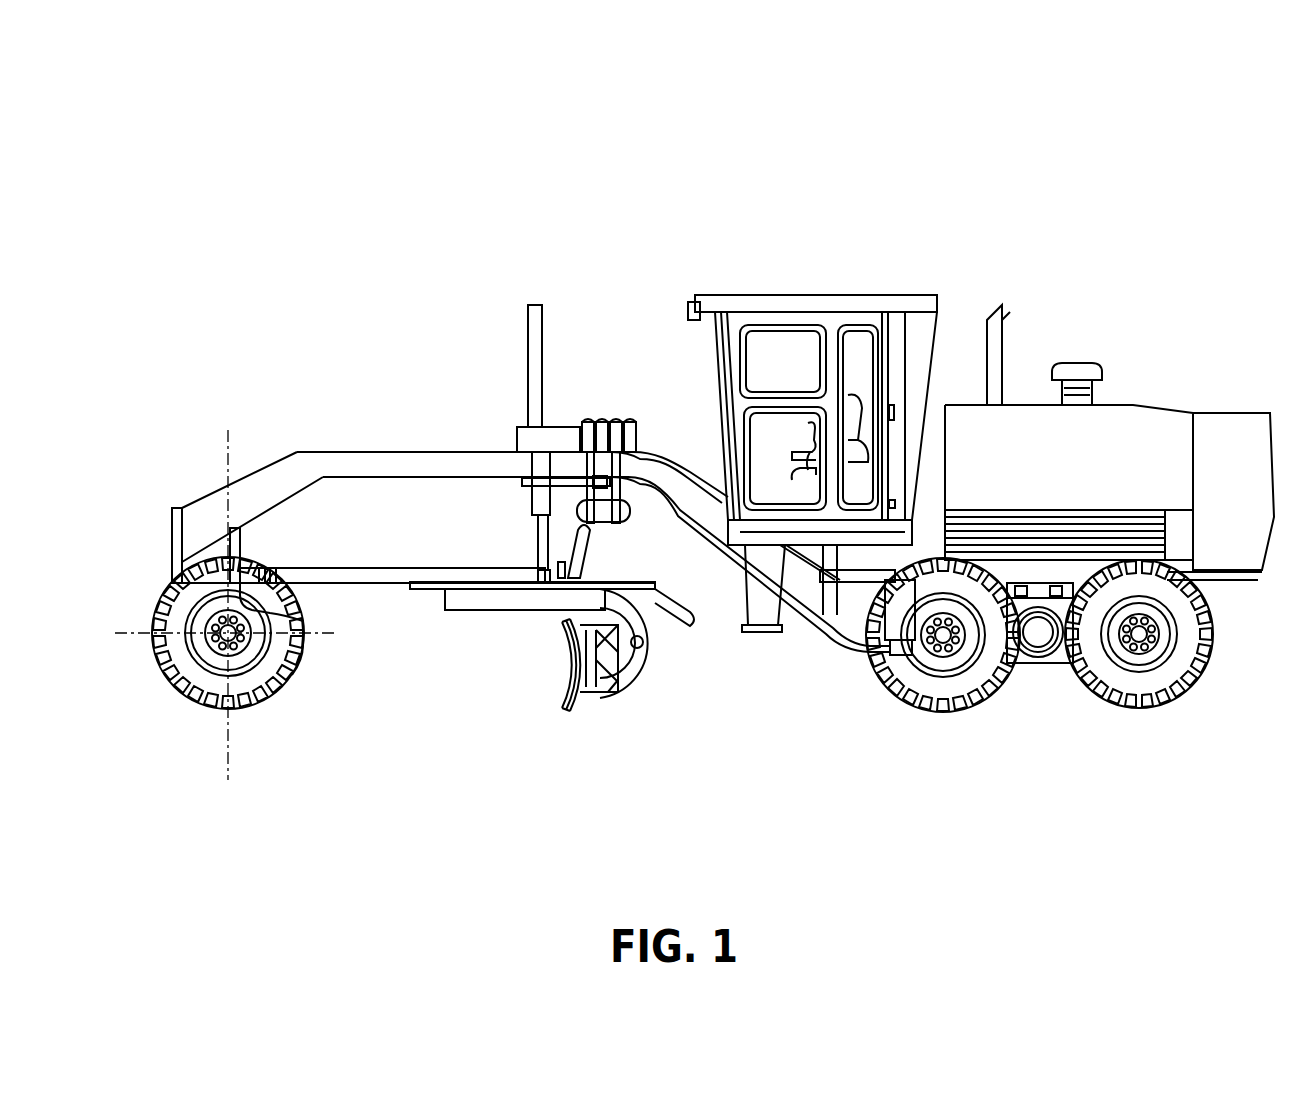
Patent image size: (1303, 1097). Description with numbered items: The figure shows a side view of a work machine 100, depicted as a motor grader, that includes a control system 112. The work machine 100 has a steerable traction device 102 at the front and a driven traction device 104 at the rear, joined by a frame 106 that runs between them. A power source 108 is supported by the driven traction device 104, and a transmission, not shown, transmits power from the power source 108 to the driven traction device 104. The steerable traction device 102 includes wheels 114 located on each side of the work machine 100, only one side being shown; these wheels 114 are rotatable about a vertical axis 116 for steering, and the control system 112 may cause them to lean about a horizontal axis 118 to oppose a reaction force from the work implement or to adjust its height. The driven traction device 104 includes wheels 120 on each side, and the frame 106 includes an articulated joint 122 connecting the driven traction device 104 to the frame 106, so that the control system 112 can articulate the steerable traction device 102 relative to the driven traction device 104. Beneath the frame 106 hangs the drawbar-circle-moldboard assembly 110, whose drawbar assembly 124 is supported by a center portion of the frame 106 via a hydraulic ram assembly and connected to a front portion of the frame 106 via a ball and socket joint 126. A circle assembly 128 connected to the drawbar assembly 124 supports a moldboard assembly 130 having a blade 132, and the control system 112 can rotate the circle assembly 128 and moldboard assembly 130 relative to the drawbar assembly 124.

The work machine 100 is at (162, 64).
The steerable traction device 102 is at (160, 705).
The driven traction device 104 is at (1200, 712).
The frame 106 is at (414, 465).
The power source 108 is at (1030, 378).
The drawbar-circle-moldboard assembly (DCM) 110 is at (435, 698).
The control system 112 is at (803, 417).
The wheels 114 is at (262, 700).
The vertical axis 116 is at (235, 770).
The horizontal axis 118 is at (325, 636).
The wheels 120 is at (1090, 682).
The articulated joint 122 is at (838, 652).
The drawbar assembly 124 is at (405, 540).
The ball and socket joint 126 is at (270, 568).
The circle assembly 128 is at (498, 600).
The moldboard assembly 130 is at (546, 690).
The blade 132 is at (576, 710).